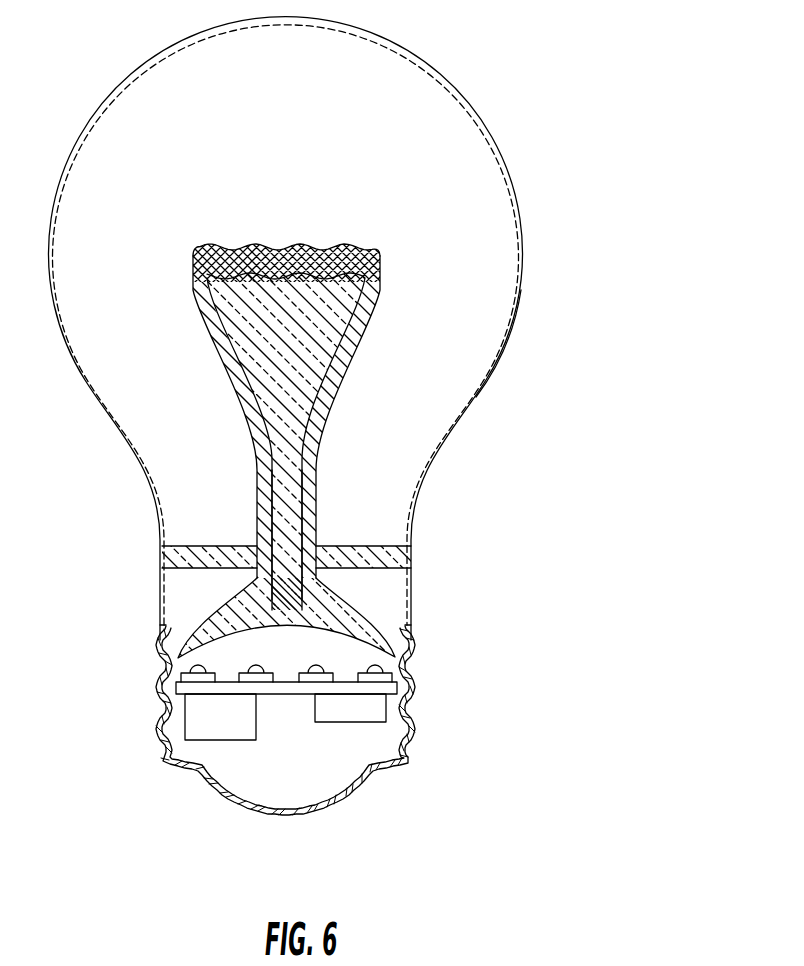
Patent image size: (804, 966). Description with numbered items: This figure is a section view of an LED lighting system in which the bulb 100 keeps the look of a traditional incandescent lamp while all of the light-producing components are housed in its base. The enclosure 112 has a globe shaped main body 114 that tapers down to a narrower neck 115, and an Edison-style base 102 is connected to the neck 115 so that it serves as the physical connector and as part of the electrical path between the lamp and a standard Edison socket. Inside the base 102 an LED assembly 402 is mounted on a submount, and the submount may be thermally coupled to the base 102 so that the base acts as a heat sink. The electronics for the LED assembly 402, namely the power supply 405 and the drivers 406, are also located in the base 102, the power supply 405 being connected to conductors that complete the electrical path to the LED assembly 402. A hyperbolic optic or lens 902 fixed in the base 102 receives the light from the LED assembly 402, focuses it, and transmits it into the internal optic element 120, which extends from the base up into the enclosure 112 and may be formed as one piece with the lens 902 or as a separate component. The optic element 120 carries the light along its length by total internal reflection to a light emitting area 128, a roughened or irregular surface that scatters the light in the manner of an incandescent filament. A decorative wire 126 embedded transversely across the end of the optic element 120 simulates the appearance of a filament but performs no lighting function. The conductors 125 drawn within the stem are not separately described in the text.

The bulb 100 is at (508, 152).
The Edison-style base 102 is at (410, 684).
The enclosure 112 is at (530, 233).
The globe shaped main body 114 is at (515, 325).
The neck 115 is at (413, 523).
The optic element 120 is at (330, 464).
The stem conductors 125 is at (273, 508).
The wire 126 is at (228, 265).
The light emitting area 128 is at (325, 250).
The hyperbolic optic or lens 902 is at (378, 628).
The LED assembly 402 is at (257, 725).
The power supply 405 is at (326, 760).
The drivers 406 is at (363, 723).